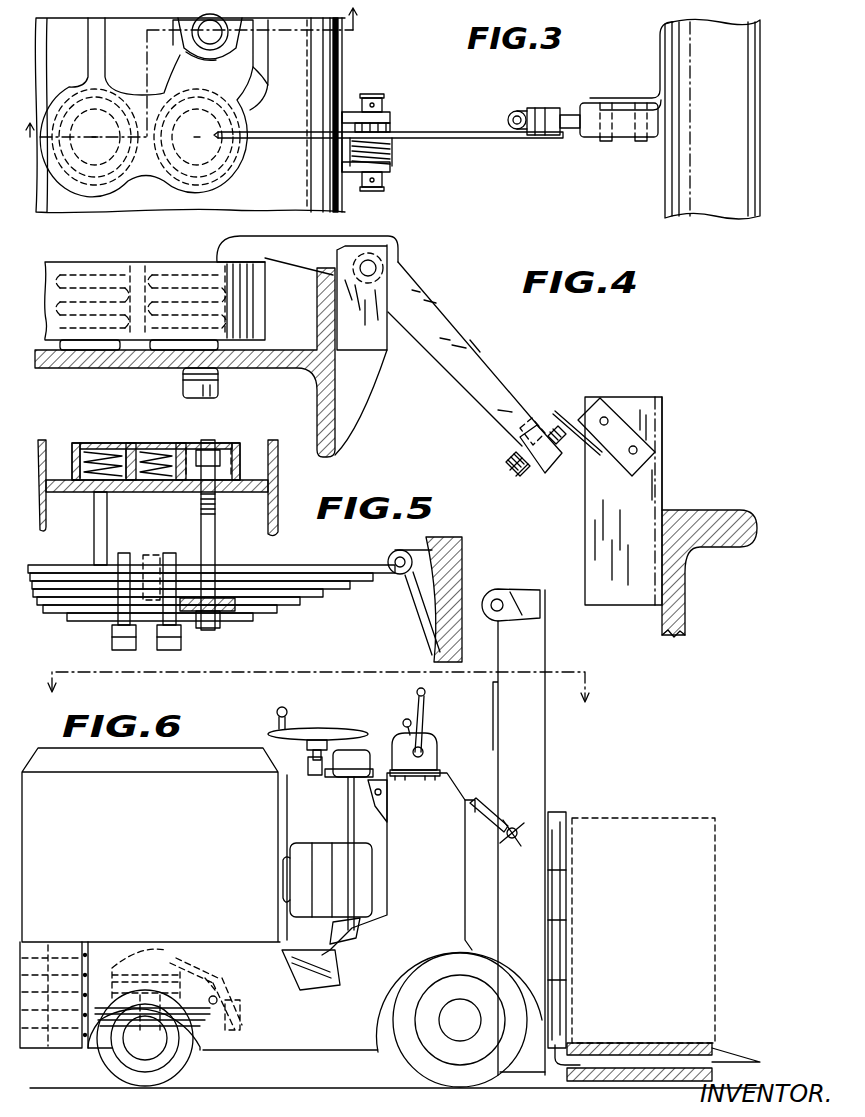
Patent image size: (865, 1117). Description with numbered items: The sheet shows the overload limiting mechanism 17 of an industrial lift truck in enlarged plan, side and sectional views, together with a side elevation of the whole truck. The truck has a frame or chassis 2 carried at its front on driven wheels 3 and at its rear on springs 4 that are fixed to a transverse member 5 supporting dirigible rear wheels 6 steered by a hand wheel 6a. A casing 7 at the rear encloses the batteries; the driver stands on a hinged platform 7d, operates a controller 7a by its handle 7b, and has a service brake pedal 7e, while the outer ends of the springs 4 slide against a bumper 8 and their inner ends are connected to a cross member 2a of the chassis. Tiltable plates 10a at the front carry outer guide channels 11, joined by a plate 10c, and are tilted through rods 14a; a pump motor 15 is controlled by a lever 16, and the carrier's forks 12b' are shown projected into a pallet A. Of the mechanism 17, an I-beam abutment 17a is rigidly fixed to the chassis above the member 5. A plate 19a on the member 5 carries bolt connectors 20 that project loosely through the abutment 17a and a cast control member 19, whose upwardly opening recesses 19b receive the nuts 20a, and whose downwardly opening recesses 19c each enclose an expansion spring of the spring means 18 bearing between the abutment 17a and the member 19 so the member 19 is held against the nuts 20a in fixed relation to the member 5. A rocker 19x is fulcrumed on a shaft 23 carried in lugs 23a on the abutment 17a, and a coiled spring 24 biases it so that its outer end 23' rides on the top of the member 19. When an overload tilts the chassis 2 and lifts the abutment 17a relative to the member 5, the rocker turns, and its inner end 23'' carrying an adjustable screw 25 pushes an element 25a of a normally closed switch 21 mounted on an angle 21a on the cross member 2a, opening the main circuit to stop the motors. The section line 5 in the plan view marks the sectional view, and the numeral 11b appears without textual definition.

In FIG. 6, the frame or chassis 2 is at (393, 880).
In FIG. 3, the cross member 2a is at (720, 216).
In FIG. 4, the cross member 2a is at (683, 600).
In FIG. 5, the cross member 2a is at (447, 552).
In FIG. 6, the wheels 3 is at (455, 1080).
In FIG. 5, the springs 4 is at (290, 600).
In FIG. 6, the springs 4 is at (193, 1050).
In FIG. 3, the transverse member 5 is at (198, 88).
In FIG. 6, the rear wheels 6 is at (145, 1088).
In FIG. 6, the wheel 6a is at (350, 735).
In FIG. 6, the casing 7 is at (255, 818).
In FIG. 6, the controller 7a is at (450, 752).
In FIG. 6, the operating handle 7b is at (424, 710).
In FIG. 6, the hinged platform 7d is at (290, 975).
In FIG. 6, the service brake pedal 7e is at (338, 925).
In FIG. 6, the bumper 8 is at (35, 1048).
In FIG. 6, the plates 10a is at (467, 886).
In FIG. 6, the plate 10c is at (490, 742).
In FIG. 6, the outer guide channels 11 is at (530, 742).
In FIG. 5, the mast pivot bracket 11b is at (490, 590).
In FIG. 6, the forks 12b' is at (585, 938).
In FIG. 6, the rods 14a is at (480, 805).
In FIG. 6, the motor 15 is at (307, 848).
In FIG. 6, the lever 16 is at (403, 722).
In FIG. 4, the limiting mechanism 17 is at (450, 379).
In FIG. 3, the abutment 17a is at (70, 200).
In FIG. 4, the abutment 17a is at (335, 395).
In FIG. 5, the abutment 17a is at (278, 480).
In FIG. 6, the abutment 17a is at (170, 935).
In FIG. 4, the spring means 18 is at (141, 301).
In FIG. 5, the spring means 18 is at (170, 425).
In FIG. 3, the control member 19 is at (143, 210).
In FIG. 4, the control member 19 is at (250, 292).
In FIG. 5, the control member 19 is at (240, 450).
In FIG. 5, the plate 19a is at (222, 622).
In FIG. 3, the recesses 19b is at (255, 68).
In FIG. 4, the recesses 19c is at (268, 328).
In FIG. 5, the recesses 19c is at (95, 440).
In FIG. 3, the rocker 19x is at (458, 140).
In FIG. 4, the rocker 19x is at (480, 375).
In FIG. 6, the rocker 19x is at (200, 968).
In FIG. 3, the connectors 20 is at (180, 38).
In FIG. 4, the connectors 20 is at (182, 386).
In FIG. 5, the connectors 20 is at (235, 540).
In FIG. 3, the nuts 20a is at (186, 55).
In FIG. 5, the nuts 20a is at (210, 450).
In FIG. 3, the switch 21 is at (625, 134).
In FIG. 4, the switch 21 is at (640, 462).
In FIG. 3, the angle 21a is at (640, 98).
In FIG. 4, the angle 21a is at (630, 398).
In FIG. 3, the shaft 23 is at (387, 124).
In FIG. 4, the shaft 23 is at (438, 345).
In FIG. 4, the outer end of the rocker 23' is at (283, 254).
In FIG. 4, the inner end of the rocker 23'' is at (538, 420).
In FIG. 3, the lugs 23a is at (350, 205).
In FIG. 4, the lugs 23a is at (375, 352).
In FIG. 3, the spring 24 is at (392, 158).
In FIG. 4, the screw 25 is at (518, 476).
In FIG. 4, the element 25a is at (563, 410).
In FIG. 6, the pallet A is at (680, 1048).